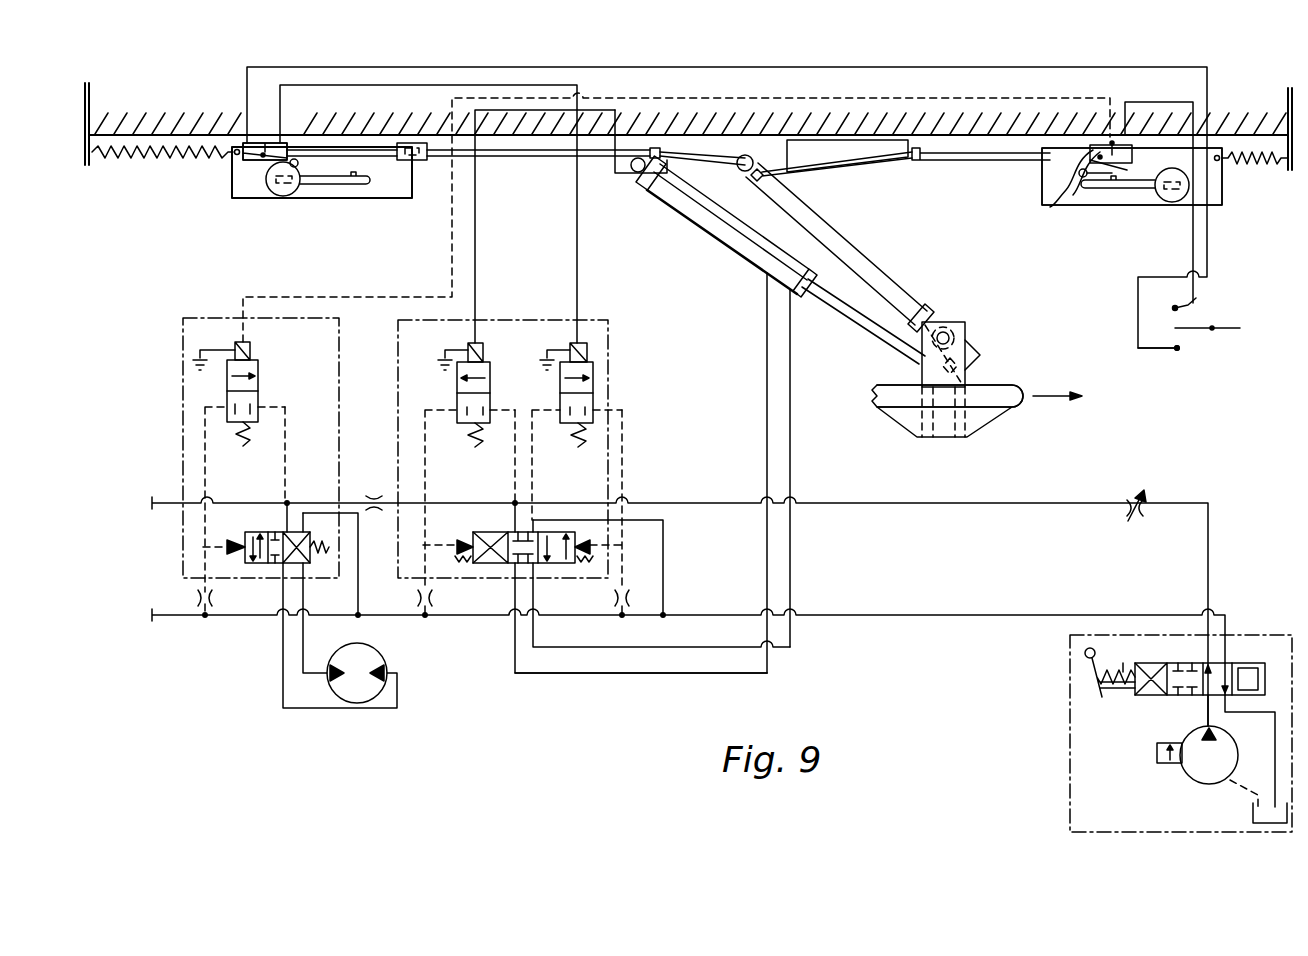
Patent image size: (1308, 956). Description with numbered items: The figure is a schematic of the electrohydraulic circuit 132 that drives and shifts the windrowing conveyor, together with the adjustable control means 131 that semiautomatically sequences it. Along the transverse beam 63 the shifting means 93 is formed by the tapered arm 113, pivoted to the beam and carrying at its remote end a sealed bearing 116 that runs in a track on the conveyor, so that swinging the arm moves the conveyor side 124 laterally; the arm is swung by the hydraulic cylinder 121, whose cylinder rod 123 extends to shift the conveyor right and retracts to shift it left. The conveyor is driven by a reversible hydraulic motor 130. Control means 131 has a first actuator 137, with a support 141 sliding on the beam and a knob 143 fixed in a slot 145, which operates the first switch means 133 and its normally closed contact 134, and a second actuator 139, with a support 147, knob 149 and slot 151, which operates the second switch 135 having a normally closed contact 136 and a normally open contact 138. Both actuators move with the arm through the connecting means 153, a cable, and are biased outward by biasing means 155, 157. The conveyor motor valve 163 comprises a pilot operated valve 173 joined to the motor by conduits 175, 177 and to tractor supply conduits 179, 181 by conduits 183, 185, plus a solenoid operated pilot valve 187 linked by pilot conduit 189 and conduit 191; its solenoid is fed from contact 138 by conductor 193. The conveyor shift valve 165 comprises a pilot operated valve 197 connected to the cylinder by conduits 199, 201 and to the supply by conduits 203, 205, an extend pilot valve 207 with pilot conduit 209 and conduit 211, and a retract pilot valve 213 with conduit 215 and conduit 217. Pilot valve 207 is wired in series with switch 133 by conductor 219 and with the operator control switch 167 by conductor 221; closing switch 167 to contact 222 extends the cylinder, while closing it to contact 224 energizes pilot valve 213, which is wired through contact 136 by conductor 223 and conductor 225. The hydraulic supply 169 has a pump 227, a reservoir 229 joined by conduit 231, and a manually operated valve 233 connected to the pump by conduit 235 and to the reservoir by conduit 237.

The transverse beam 63 is at (1258, 95).
The shifting means 93 is at (722, 278).
The tapered arm 113 is at (830, 236).
The sealed bearing 116 is at (968, 331).
The hydraulic cylinder 121 is at (703, 218).
The cylinder rod 123 is at (868, 328).
The conveyor side 124 is at (993, 385).
The hydraulic motor 130 is at (385, 660).
The adjustable control means 131 is at (185, 230).
The electrohydraulic circuit 132 is at (596, 715).
The first switch means 133 is at (259, 112).
The normally closed contact 134 is at (290, 130).
The second switch 135 is at (1102, 120).
The normally closed contact 136 is at (1052, 165).
The first actuator 137 is at (300, 215).
The normally open contact 138 is at (1045, 200).
The second actuator 139 is at (1050, 218).
The support 141 is at (395, 198).
The knob 143 is at (277, 193).
The slot 145 is at (353, 186).
The support 147 is at (1050, 178).
The knob 149 is at (1170, 202).
The slot 151 is at (1113, 184).
The connecting means 153 is at (490, 160).
The biasing means 155 is at (158, 152).
The biasing means 157 is at (1233, 166).
The conveyor motor valve 163 is at (183, 375).
The conveyor shift valve 165 is at (610, 338).
The operator control switch 167 is at (1224, 360).
The hydraulic supply 169 is at (1062, 715).
The pilot operated valve 173 is at (262, 530).
The conduit 175 is at (283, 683).
The conduit 177 is at (305, 633).
The tractor supply conduit 179 is at (263, 490).
The tractor supply conduit 181 is at (228, 617).
The conduit 183 is at (297, 512).
The conduit 185 is at (358, 598).
The solenoid operated pilot valve 187 is at (258, 370).
The pilot conduit 189 is at (205, 442).
The conduit 191 is at (287, 428).
The conductor 193 is at (945, 97).
The pilot operated valve 197 is at (552, 565).
The conduit 199 is at (790, 553).
The conduit 201 is at (765, 470).
The conduit 203 is at (510, 513).
The conduit 205 is at (665, 553).
The solenoid operated pilot valve 207 is at (560, 395).
The pilot conduit 209 is at (622, 438).
The conduit 211 is at (532, 462).
The solenoid operated pilot valve 213 is at (457, 395).
The conduit 215 is at (425, 455).
The conduit 217 is at (515, 485).
The conductor 219 is at (283, 96).
The conductor 221 is at (247, 82).
The contact 222 is at (1177, 350).
The conductor 223 is at (817, 97).
The contact 224 is at (1192, 303).
The conductor 225 is at (1128, 100).
The pump 227 is at (1180, 775).
The reservoir 229 is at (1253, 818).
The conduit 231 is at (1240, 790).
The manually operated valve 233 is at (1265, 665).
The conduit 235 is at (1205, 712).
The conduit 237 is at (1272, 750).